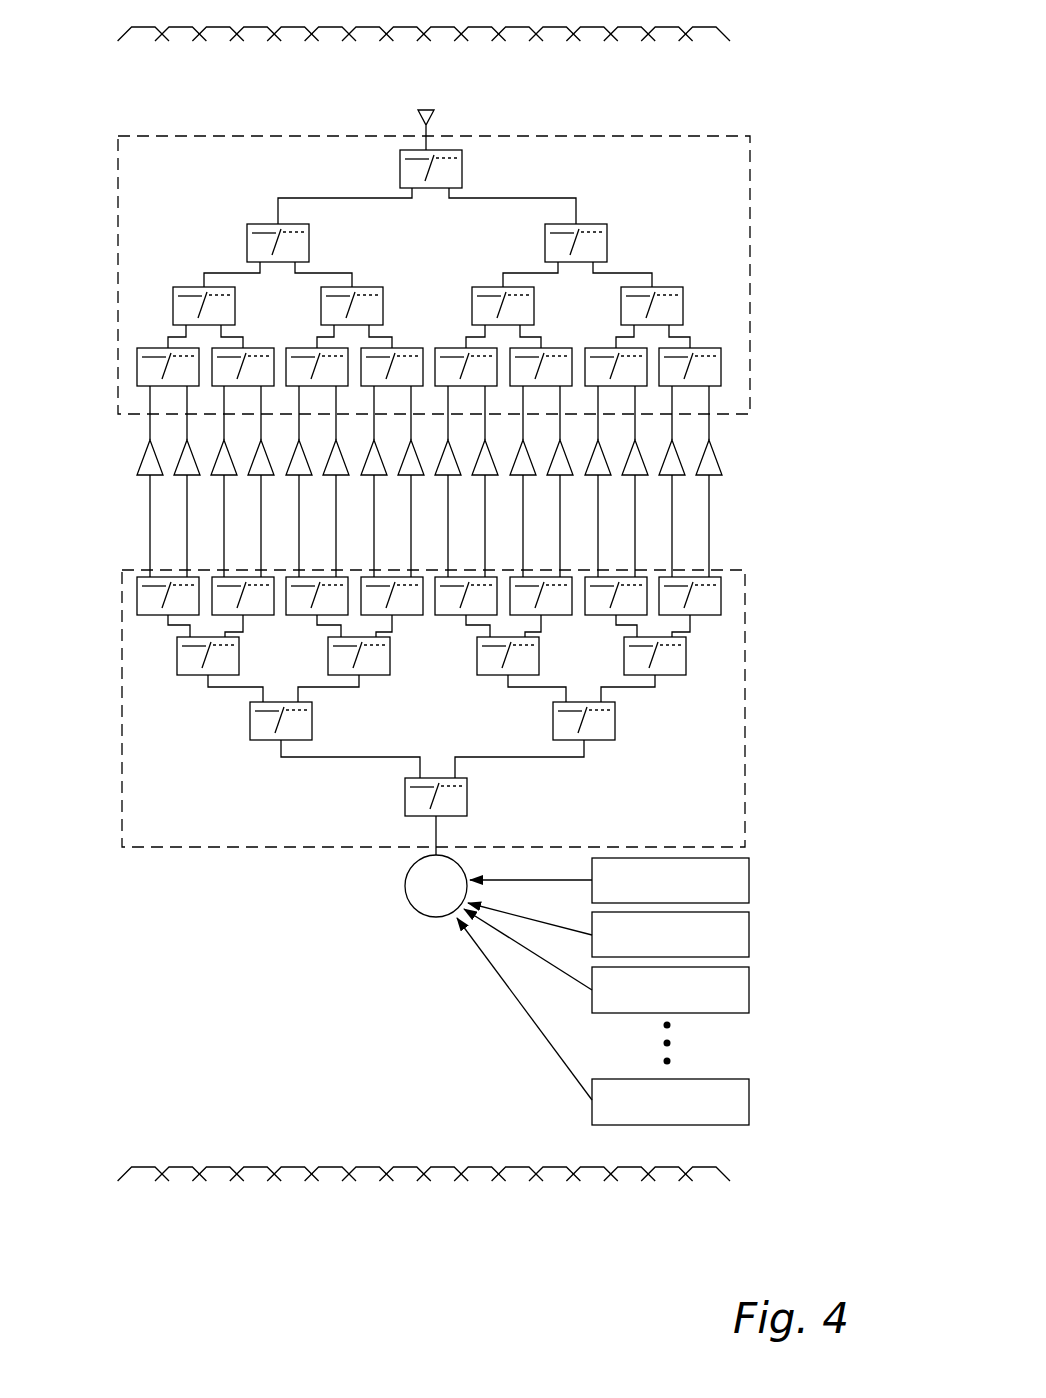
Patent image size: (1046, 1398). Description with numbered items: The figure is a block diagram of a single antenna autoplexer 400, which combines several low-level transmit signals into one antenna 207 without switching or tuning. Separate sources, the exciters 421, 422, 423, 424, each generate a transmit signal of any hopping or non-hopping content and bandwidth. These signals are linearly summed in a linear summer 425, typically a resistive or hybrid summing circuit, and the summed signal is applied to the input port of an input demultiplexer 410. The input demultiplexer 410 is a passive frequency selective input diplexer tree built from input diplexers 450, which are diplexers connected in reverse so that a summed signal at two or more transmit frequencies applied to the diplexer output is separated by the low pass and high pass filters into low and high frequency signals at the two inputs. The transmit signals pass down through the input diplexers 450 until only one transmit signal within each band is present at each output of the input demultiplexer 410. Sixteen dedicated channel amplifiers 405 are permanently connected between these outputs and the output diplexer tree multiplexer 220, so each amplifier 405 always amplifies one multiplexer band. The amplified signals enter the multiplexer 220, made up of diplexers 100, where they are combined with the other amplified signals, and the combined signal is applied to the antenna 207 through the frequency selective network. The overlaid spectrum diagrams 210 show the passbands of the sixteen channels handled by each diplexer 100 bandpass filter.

The diplexer 100 is at (247, 240).
The antenna 207 is at (436, 115).
The overlaid spectrum diagrams 210 is at (746, 33).
The diplexer tree multiplexer 220 is at (750, 150).
The single antenna autoplexer 400 is at (97, 790).
The channel amplifiers 405 is at (745, 504).
The input demultiplexer 410 is at (746, 663).
The exciter 421 is at (749, 868).
The exciter 422 is at (749, 926).
The exciter 423 is at (749, 982).
The exciter 424 is at (749, 1094).
The linear summer 425 is at (405, 885).
The input diplexers 450 is at (148, 617).